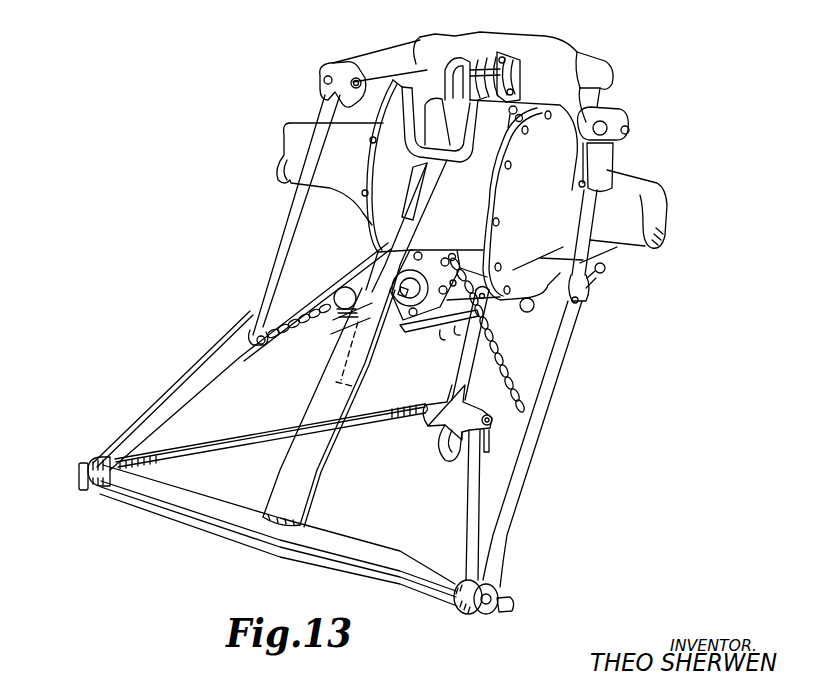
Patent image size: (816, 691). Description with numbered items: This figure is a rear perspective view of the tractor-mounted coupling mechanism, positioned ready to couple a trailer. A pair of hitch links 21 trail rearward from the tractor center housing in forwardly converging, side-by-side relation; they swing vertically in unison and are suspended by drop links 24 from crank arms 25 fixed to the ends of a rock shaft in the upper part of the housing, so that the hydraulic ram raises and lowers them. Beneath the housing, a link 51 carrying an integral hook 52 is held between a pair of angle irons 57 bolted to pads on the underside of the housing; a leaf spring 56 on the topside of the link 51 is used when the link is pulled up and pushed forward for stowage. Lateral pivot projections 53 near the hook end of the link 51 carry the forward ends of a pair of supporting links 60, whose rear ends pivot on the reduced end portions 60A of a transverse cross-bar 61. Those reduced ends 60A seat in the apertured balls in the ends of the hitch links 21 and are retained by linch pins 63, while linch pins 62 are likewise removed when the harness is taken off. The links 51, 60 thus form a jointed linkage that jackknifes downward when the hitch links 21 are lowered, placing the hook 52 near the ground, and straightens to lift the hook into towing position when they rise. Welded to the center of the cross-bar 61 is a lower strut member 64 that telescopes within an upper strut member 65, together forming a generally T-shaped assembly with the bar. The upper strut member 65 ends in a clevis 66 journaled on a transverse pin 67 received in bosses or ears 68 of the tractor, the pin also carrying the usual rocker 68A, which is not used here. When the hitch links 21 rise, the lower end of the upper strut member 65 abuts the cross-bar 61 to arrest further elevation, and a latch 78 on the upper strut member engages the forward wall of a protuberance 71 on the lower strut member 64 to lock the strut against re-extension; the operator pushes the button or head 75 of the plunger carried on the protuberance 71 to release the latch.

The hitch links 21 is at (182, 377).
The drop links 24 is at (292, 202).
The crank arms 25 is at (607, 97).
The link 51 is at (467, 357).
The hook 52 is at (447, 460).
The pivot projections 53 is at (491, 424).
The leaf spring 56 is at (487, 303).
The angle irons 57 is at (463, 320).
The links 60 is at (245, 433).
The reduced end portions 60A is at (73, 470).
The cross-bar 61 is at (343, 552).
The linch pins 62 is at (484, 452).
The linch pins 63 is at (90, 497).
The lower strut member 64 is at (323, 467).
The upper strut member 65 is at (432, 193).
The clevis 66 is at (472, 160).
The transverse pin 67 is at (517, 110).
The bosses or ears 68 is at (444, 62).
The rocker 68A is at (452, 62).
The protuberance 71 is at (340, 320).
The button or head 75 is at (340, 287).
The latch 78 is at (417, 173).